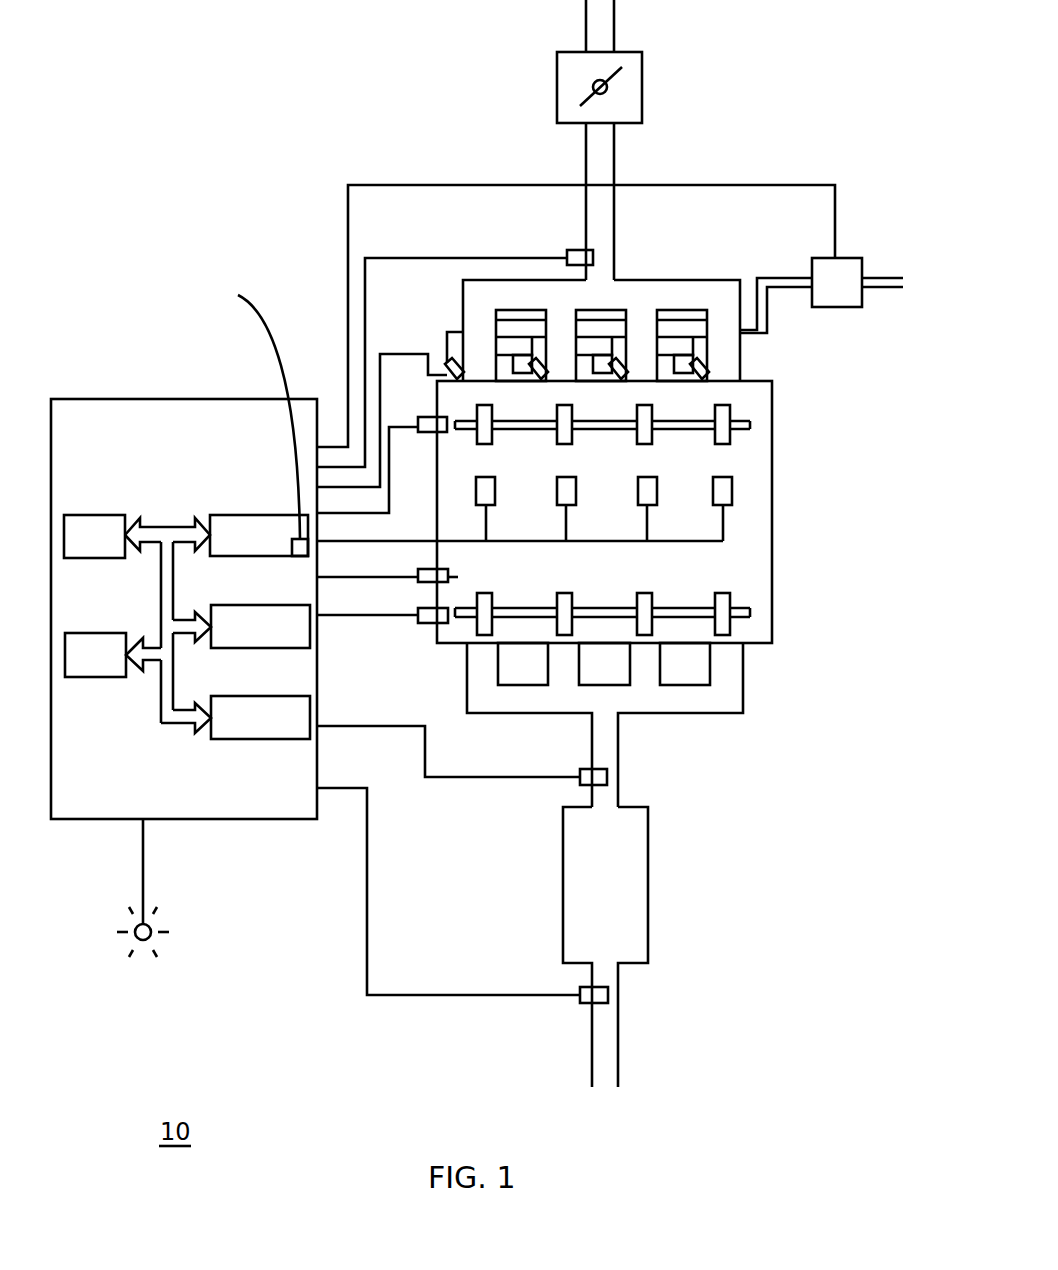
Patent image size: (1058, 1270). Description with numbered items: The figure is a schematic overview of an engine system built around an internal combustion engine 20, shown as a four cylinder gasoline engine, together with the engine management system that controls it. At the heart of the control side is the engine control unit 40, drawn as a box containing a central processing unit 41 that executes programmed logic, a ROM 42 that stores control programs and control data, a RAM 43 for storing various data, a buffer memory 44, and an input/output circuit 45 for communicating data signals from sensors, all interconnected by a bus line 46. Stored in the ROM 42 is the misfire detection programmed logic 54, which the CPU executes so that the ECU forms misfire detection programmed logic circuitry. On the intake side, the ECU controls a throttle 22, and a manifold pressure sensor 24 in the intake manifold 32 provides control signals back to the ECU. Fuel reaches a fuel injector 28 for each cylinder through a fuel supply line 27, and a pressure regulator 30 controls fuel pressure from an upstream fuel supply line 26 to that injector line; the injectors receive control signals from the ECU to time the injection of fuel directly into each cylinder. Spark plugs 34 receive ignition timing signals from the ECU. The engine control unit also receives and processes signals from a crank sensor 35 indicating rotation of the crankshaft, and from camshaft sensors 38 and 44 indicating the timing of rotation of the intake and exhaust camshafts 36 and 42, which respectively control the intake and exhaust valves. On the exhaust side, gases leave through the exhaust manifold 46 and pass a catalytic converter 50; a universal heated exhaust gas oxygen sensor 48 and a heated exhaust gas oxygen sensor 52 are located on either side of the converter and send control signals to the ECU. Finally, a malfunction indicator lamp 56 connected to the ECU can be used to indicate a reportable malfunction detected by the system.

The internal combustion engine 20 is at (830, 516).
The throttle 22 is at (642, 82).
The manifold pressure sensor 24 is at (570, 251).
The fuel supply line 26 is at (880, 290).
The fuel supply line 27 is at (768, 333).
The fuel injector 28 is at (437, 397).
The pressure regulator 30 is at (820, 258).
The intake manifold 32 is at (690, 280).
The spark plugs 34 is at (732, 490).
The crank sensor 35 is at (457, 577).
The intake camshaft 36 is at (750, 422).
The camshaft sensor 38 is at (425, 433).
The engine control unit 40 is at (137, 399).
The central processing unit 41 is at (104, 515).
The ROM 42 is at (750, 611).
The RAM 43 is at (257, 605).
The buffer memory 44 is at (428, 624).
The input/output circuit 45 is at (115, 633).
The bus line 46 is at (720, 714).
The universal heated exhaust gas oxygen sensor 48 is at (580, 786).
The catalytic converter 50 is at (648, 846).
The heated exhaust gas oxygen sensor 52 is at (580, 1003).
The misfire detection programmed logic 54 is at (203, 370).
The malfunction indicator lamp 56 is at (169, 932).